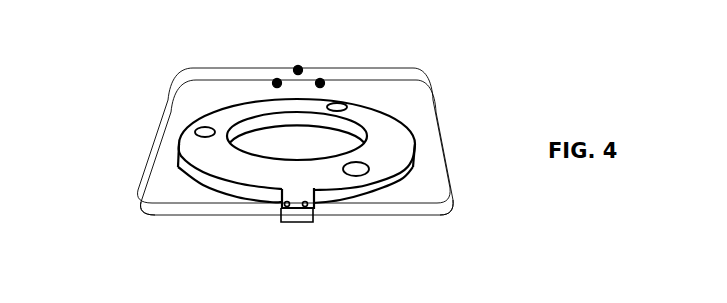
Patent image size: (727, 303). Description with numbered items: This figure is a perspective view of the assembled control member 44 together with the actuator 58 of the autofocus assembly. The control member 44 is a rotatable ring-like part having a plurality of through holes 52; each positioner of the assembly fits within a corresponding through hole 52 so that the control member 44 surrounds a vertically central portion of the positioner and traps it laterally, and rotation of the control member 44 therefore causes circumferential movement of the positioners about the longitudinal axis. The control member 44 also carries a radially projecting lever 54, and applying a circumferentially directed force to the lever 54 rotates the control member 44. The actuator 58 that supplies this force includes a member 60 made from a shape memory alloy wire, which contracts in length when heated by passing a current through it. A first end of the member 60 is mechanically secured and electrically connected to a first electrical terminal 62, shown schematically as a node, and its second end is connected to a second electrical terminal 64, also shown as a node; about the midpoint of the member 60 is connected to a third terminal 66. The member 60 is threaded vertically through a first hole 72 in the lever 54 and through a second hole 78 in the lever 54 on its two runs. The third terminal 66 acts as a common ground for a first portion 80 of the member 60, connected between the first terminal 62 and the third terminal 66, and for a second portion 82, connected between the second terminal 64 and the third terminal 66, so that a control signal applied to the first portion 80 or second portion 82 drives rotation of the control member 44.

The actuator 58 is at (147, 79).
The member 60 is at (403, 69).
The first electrical terminal 62 is at (274, 81).
The second electrical terminal 64 is at (323, 81).
The third terminal 66 is at (295, 68).
The control member 44 is at (207, 170).
The through hole 52 is at (200, 132).
The lever 54 is at (298, 214).
The first hole 72 is at (282, 206).
The second hole 78 is at (313, 204).
The first portion 80 is at (146, 213).
The second portion 82 is at (445, 206).